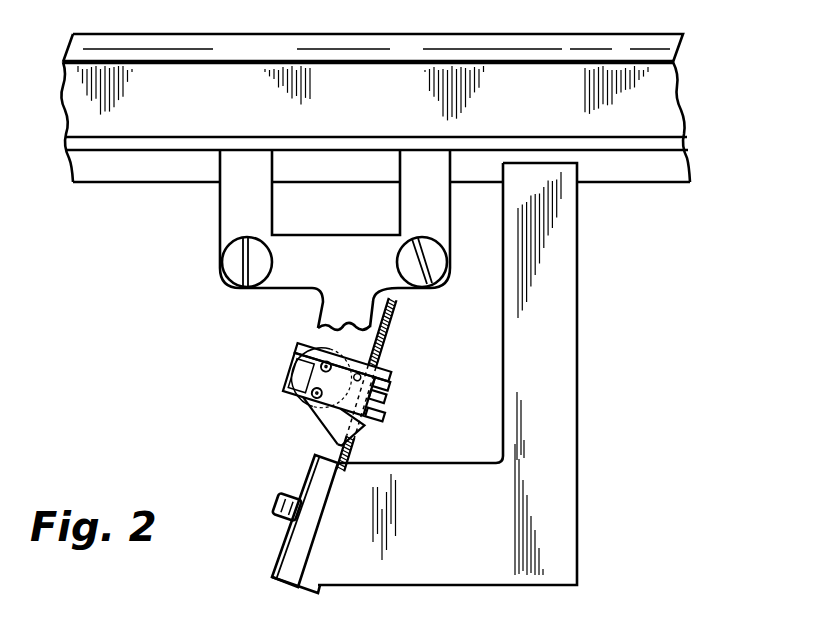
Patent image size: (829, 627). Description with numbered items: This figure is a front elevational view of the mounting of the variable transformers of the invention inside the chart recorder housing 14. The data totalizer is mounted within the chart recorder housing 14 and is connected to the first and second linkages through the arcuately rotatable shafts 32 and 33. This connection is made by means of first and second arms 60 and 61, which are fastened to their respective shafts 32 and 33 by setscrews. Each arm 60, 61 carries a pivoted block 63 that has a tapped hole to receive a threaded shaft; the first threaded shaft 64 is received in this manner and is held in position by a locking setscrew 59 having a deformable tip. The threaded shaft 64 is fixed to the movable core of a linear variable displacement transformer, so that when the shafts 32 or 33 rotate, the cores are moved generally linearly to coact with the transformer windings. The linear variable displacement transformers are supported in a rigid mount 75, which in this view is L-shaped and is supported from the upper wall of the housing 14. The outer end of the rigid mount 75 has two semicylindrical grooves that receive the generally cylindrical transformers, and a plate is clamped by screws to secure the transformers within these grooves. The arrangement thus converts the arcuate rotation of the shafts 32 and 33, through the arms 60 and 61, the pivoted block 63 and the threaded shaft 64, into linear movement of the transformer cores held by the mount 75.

The chart recorder housing 14 is at (278, 143).
The arcuately rotatable shaft 32 is at (312, 405).
The arcuately rotatable shaft 33 is at (327, 360).
The locking setscrew 59 is at (395, 390).
The first arm 60 is at (376, 427).
The second arm 61 is at (396, 372).
The pivoted block 63 is at (388, 366).
The first threaded shaft 64 is at (392, 346).
The rigid mount 75 is at (525, 585).